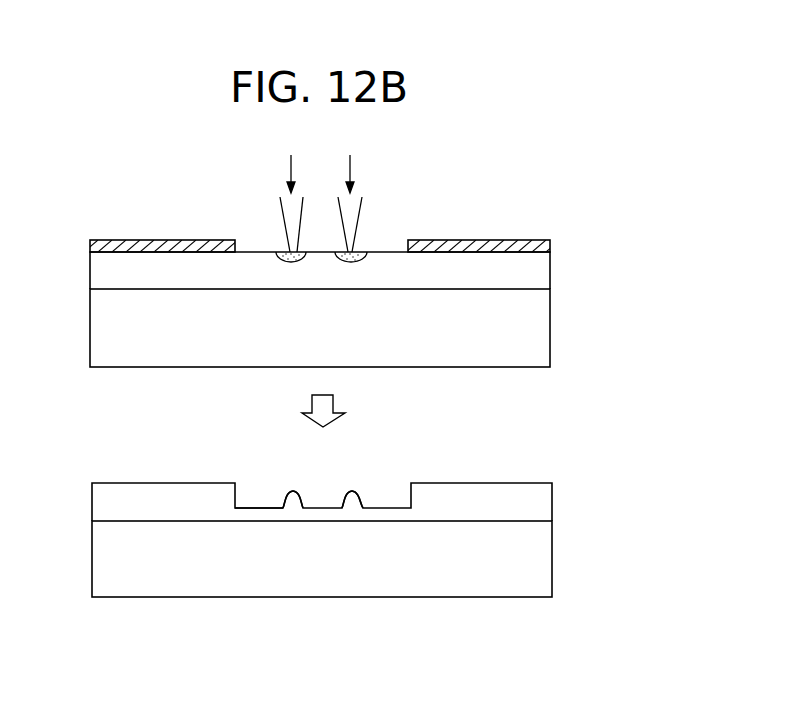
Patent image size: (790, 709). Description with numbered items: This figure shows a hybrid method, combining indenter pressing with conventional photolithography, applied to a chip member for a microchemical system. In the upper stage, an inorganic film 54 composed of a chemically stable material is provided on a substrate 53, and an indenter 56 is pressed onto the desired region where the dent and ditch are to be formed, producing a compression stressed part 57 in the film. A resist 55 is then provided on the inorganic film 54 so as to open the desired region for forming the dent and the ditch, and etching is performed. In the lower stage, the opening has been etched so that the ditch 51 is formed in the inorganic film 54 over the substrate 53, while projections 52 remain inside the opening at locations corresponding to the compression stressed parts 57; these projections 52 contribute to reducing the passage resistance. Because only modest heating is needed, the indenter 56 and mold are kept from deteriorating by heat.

The ditch 51 is at (263, 494).
The projections 52 is at (352, 495).
The substrate 53 is at (538, 328).
The inorganic film 54 is at (538, 270).
The resist 55 is at (510, 247).
The indenter 56 is at (290, 227).
The compression stressed part 57 is at (353, 250).